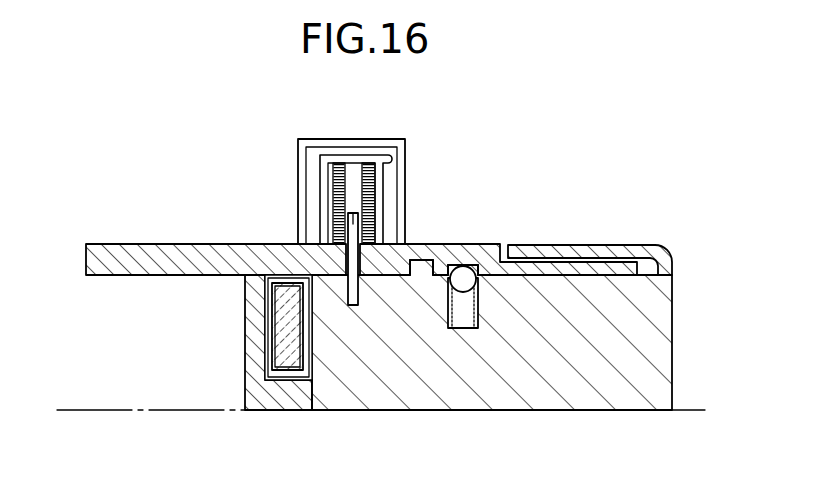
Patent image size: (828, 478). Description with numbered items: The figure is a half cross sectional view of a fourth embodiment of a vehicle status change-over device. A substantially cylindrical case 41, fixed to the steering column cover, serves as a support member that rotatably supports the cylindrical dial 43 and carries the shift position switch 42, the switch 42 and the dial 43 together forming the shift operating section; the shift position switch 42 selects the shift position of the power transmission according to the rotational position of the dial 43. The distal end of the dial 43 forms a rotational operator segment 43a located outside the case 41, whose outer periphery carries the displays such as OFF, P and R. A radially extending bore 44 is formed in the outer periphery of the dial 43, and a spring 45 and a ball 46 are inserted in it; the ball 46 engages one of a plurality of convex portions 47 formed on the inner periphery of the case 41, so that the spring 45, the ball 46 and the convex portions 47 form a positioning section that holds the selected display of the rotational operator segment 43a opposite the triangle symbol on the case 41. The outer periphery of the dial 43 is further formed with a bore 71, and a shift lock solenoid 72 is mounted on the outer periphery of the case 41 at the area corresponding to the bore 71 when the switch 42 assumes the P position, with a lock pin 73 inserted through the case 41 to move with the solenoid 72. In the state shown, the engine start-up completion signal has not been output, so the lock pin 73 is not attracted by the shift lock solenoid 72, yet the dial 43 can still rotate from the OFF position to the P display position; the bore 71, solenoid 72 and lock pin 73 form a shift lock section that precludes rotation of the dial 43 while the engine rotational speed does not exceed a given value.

The case 41 is at (174, 256).
The shift position switch 42 is at (284, 298).
The dial 43 is at (568, 290).
The rotational operator segment 43a is at (622, 250).
The bore 44 is at (443, 310).
The spring 45 is at (477, 310).
The ball 46 is at (456, 265).
The convex portions 47 is at (488, 262).
The bore 71 is at (343, 305).
The shift lock solenoid 72 is at (365, 160).
The lock pin 73 is at (378, 215).